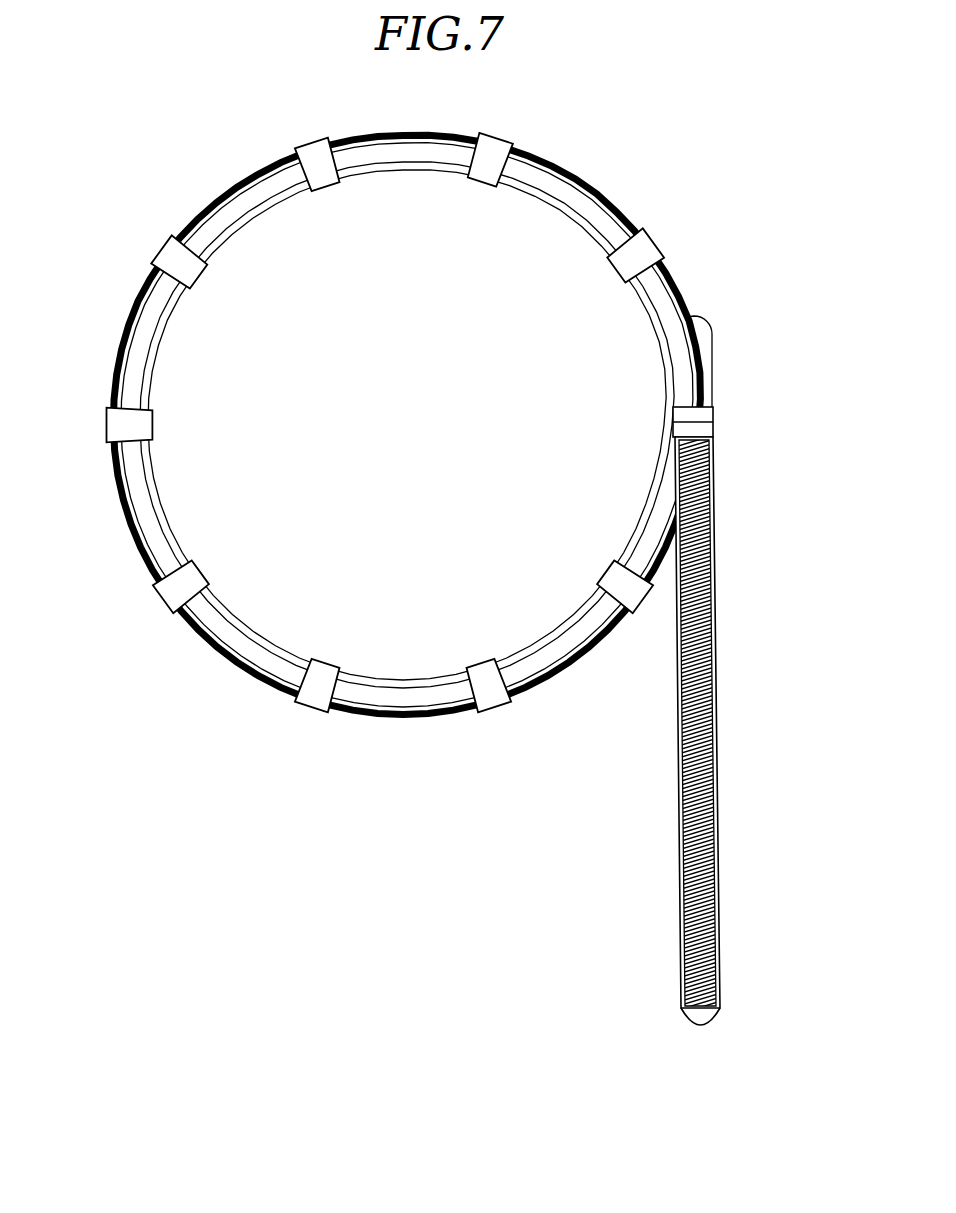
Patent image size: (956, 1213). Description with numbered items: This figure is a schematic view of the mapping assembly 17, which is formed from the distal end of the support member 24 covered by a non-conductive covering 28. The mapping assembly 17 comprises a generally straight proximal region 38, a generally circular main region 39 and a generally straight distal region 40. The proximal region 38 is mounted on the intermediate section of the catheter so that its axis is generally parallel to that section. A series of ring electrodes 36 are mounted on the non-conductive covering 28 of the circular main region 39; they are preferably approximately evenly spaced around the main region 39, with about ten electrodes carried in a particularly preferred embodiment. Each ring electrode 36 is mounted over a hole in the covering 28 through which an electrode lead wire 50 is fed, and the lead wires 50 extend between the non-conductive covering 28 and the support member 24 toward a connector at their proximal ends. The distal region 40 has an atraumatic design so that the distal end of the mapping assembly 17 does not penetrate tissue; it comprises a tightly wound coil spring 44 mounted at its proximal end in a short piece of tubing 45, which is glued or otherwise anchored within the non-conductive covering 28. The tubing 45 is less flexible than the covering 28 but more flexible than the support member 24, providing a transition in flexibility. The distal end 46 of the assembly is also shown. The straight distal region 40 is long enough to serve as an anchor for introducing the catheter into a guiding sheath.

The mapping assembly 17 is at (362, 448).
The support member 24 is at (278, 176).
The non-conductive covering 28 is at (387, 718).
The ring electrodes 36 is at (157, 592).
The generally straight proximal region 38 is at (726, 345).
The generally circular main region 39 is at (128, 299).
The generally straight distal region 40 is at (741, 692).
The coil spring 44 is at (712, 836).
The tubing 45 is at (715, 608).
The strap end 46 is at (700, 1026).
The electrode lead wire 50 is at (344, 423).